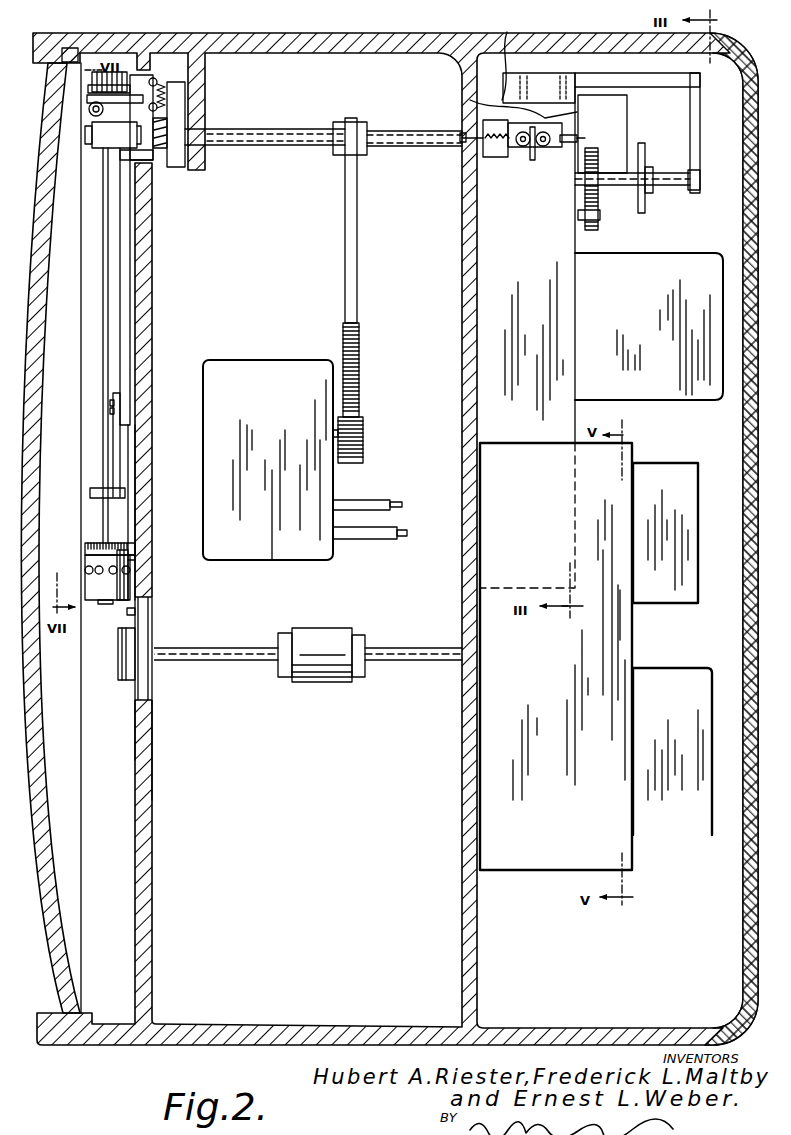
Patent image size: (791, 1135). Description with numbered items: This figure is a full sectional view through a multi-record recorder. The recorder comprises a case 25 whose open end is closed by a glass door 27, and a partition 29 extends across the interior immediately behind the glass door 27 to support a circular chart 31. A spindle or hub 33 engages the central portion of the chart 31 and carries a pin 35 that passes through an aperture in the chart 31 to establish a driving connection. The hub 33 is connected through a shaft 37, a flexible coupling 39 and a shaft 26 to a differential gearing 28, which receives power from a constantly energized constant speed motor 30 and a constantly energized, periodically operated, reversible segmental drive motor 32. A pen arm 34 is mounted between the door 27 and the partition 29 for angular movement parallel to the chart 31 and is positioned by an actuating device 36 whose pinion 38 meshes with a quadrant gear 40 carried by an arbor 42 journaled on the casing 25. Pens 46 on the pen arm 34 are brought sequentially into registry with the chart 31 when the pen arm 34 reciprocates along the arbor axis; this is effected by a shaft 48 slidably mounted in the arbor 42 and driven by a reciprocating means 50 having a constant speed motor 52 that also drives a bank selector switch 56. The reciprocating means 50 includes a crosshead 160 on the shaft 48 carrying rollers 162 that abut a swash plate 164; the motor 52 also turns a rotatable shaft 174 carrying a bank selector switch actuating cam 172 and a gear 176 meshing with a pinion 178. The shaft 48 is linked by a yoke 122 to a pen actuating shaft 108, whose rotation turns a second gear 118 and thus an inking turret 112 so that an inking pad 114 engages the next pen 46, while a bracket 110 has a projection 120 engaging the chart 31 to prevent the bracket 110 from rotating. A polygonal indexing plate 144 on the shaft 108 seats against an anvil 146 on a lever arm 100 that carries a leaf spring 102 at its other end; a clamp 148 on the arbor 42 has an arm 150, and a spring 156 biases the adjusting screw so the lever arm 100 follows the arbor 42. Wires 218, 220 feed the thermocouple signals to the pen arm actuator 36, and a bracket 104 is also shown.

The case 25 is at (228, 1043).
The shaft 26 is at (410, 647).
The glass door 27 is at (70, 52).
The differential gearing 28 is at (510, 717).
The partition 29 is at (150, 781).
The constant speed motor 30 is at (672, 463).
The circular chart 31 is at (135, 728).
The segmental drive motor 32 is at (683, 825).
The spindle or hub 33 is at (130, 640).
The pen arm 34 is at (97, 282).
The pin 35 is at (133, 608).
The actuating device 36 is at (272, 370).
The shaft 37 is at (237, 648).
The pinion 38 is at (365, 422).
The flexible coupling 39 is at (323, 637).
The quadrant gear 40 is at (350, 188).
The arbor 42 is at (375, 128).
The pens 46 is at (131, 570).
The shaft 48 is at (428, 128).
The reciprocating means 50 is at (500, 235).
The constant speed motor 52 is at (622, 105).
The bank selector switch 56 is at (660, 275).
The lever arm 100 is at (127, 257).
The leaf spring 102 is at (123, 442).
The bracket 104 is at (92, 490).
The pen actuating shaft 108 is at (105, 363).
The bracket 110 is at (87, 555).
The inking turret 112 is at (97, 580).
The inking pads 114 is at (127, 550).
The second gear 118 is at (97, 543).
The projection 120 is at (133, 530).
The yoke 122 is at (110, 137).
The indexing plate 144 is at (135, 75).
The anvil 146 is at (147, 80).
The clamp 148 is at (177, 165).
The arm 150 is at (92, 148).
The spring 156 is at (167, 98).
The crosshead 160 is at (523, 65).
The rollers 162 is at (508, 123).
The swash plate 164 is at (522, 158).
The bank selector switch actuating cam 172 is at (645, 153).
The rotatable shaft 174 is at (680, 182).
The gear 176 is at (597, 160).
The pinion 178 is at (590, 220).
The wire 218 is at (374, 539).
The wire 220 is at (370, 502).